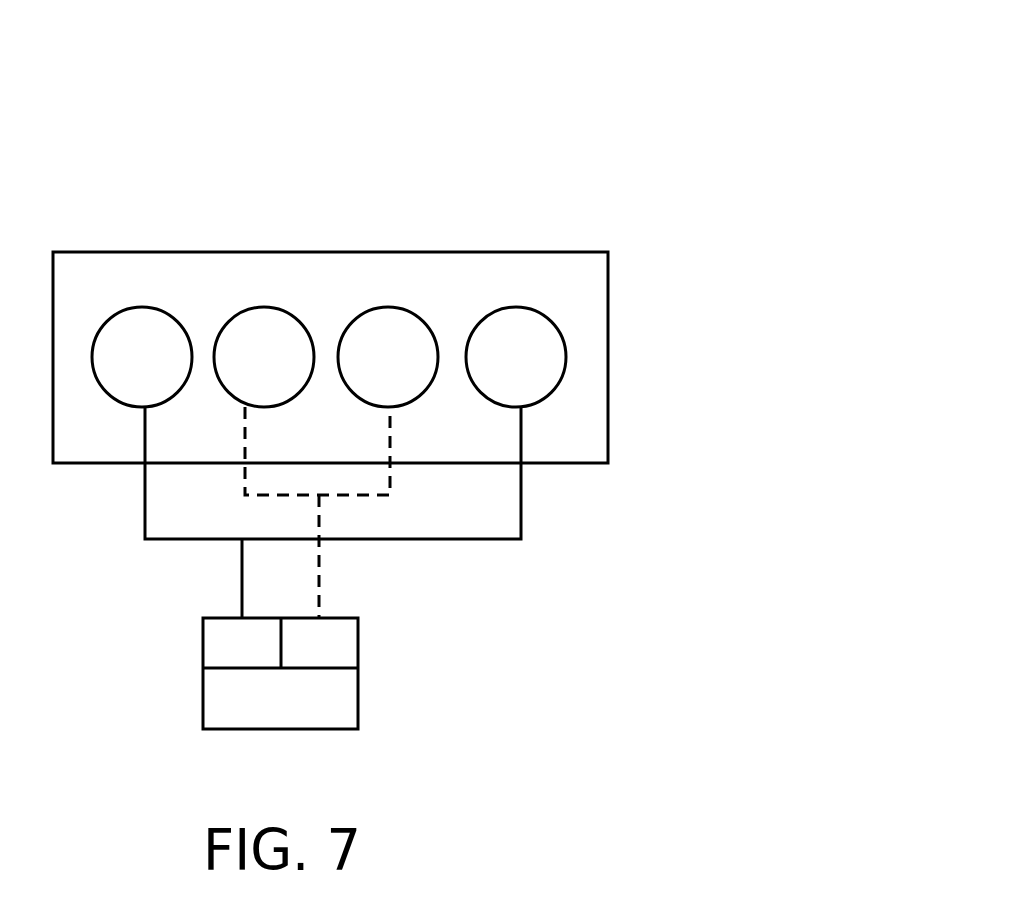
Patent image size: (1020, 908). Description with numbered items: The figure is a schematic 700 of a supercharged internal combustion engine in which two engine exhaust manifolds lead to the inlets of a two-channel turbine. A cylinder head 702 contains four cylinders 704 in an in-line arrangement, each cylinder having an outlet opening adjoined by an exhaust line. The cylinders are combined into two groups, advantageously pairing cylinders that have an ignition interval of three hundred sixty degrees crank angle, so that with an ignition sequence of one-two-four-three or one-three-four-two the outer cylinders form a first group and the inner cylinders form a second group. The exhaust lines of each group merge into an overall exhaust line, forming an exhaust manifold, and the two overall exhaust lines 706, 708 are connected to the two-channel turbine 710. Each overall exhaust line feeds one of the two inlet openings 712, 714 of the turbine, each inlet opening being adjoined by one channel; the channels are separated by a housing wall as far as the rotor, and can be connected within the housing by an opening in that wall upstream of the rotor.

The schematic 700 is at (648, 82).
The cylinder head 702 is at (541, 252).
The cylinders 704 is at (145, 307).
The overall exhaust line 706 is at (521, 518).
The overall exhaust line 708 is at (320, 592).
The two-channel turbine 710 is at (325, 673).
The inlet opening 712 is at (242, 644).
The inlet opening 714 is at (319, 644).